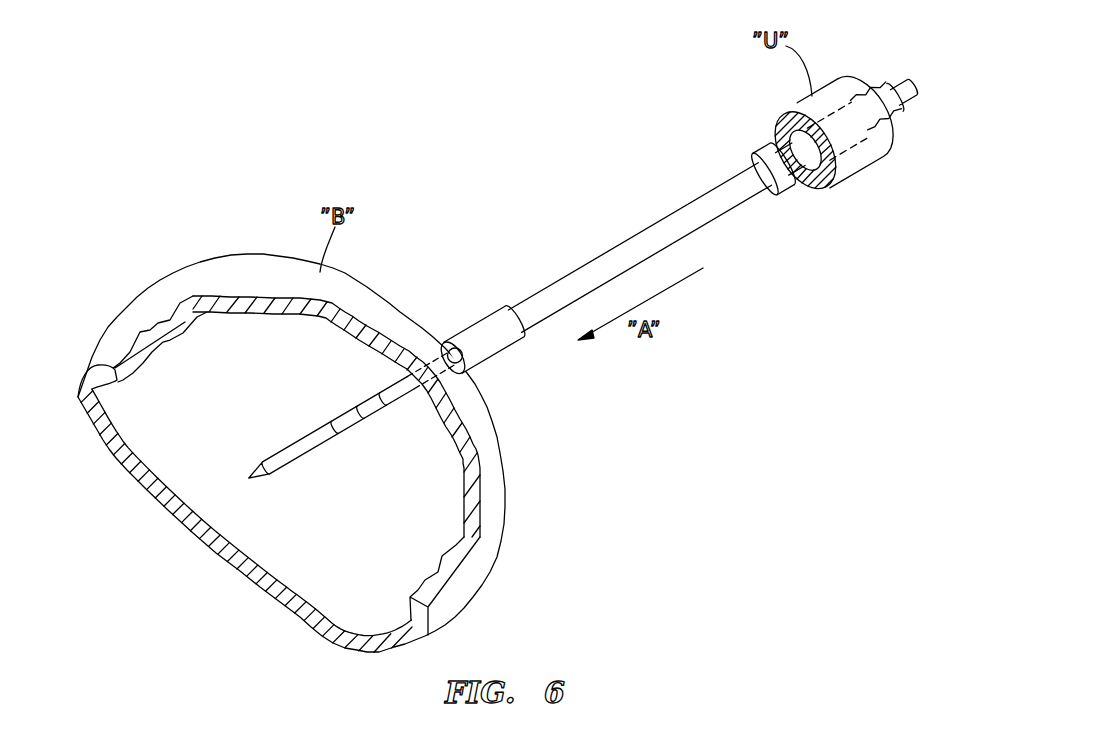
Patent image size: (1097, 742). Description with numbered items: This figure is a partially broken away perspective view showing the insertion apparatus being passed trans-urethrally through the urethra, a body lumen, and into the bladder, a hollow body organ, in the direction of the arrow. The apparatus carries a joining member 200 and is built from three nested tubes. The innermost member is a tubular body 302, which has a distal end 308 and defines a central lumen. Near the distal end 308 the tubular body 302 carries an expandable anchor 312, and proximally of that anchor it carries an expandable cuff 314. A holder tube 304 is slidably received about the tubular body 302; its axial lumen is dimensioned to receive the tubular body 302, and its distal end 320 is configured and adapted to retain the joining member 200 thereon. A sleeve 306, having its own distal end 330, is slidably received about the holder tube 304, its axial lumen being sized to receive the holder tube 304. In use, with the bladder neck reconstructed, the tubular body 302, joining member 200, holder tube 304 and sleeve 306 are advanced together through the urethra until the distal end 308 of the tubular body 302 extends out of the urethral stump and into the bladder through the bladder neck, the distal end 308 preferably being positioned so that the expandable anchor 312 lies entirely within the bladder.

The joining member 200 is at (577, 301).
The tubular body 302 is at (300, 445).
The holder tube 304 is at (627, 241).
The sleeve 306 is at (772, 150).
The distal end of tubular body 308 is at (276, 467).
The expandable anchor 312 is at (347, 415).
The expandable cuff 314 is at (387, 400).
The distal end of holder tube 320 is at (518, 300).
The distal end of sleeve 330 is at (786, 188).